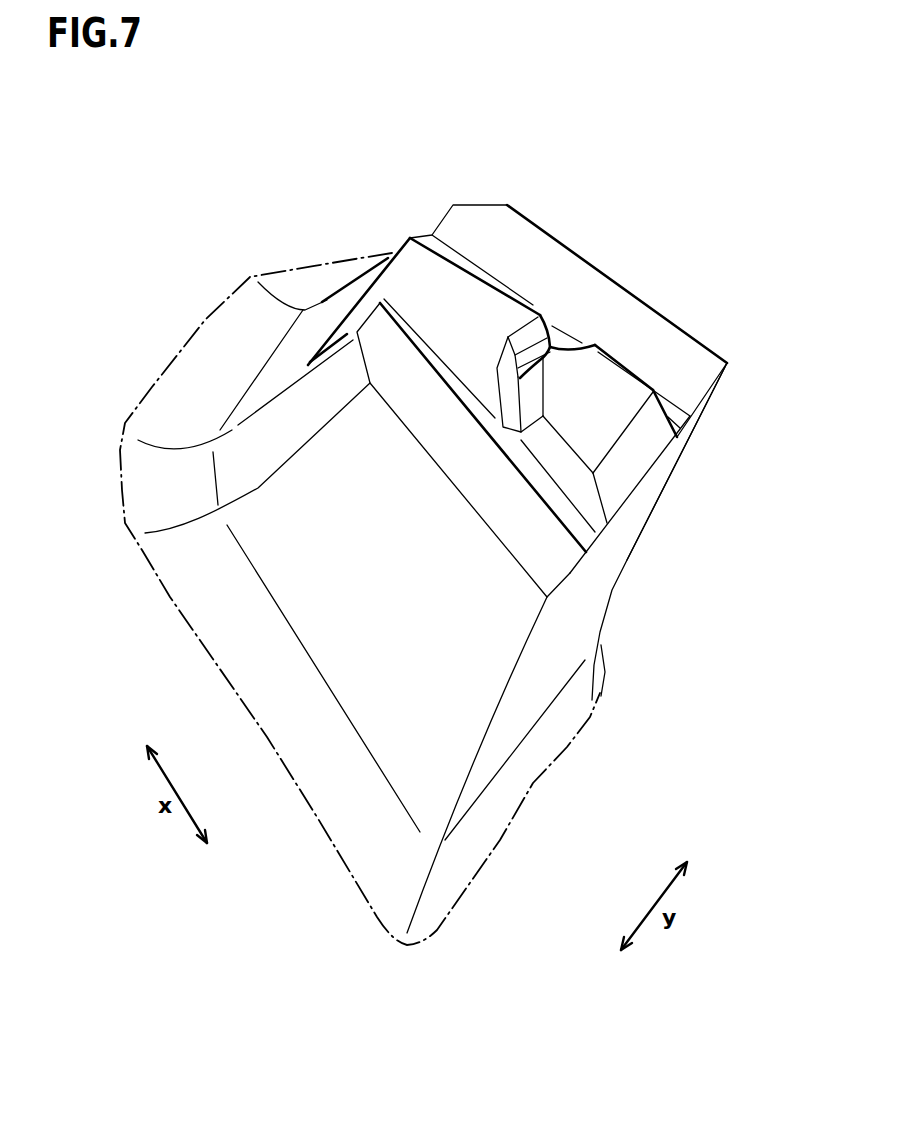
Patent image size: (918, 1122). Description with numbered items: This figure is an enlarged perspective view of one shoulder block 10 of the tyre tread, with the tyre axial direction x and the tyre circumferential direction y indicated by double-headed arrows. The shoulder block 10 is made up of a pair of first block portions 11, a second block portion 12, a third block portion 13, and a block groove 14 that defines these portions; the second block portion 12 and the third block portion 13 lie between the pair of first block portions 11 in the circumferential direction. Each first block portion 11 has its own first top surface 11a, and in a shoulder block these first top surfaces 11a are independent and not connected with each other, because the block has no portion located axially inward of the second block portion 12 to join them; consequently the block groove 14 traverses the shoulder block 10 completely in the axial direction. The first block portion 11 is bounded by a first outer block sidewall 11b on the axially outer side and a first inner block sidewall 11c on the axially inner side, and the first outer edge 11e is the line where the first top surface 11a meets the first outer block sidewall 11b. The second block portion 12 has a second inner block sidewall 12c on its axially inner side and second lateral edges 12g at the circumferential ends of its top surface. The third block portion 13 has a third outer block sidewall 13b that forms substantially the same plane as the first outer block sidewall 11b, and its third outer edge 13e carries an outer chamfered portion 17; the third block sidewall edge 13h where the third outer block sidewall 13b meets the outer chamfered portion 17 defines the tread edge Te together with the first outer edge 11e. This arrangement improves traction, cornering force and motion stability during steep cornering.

The shoulder block 10 is at (668, 155).
The first block portion 11 is at (680, 363).
The first top surface 11a is at (464, 446).
The first outer block sidewall 11b is at (510, 725).
The first inner block sidewall 11c is at (343, 337).
The first outer edge 11e is at (570, 573).
The second block portion 12 is at (455, 287).
The second inner block sidewall 12c is at (366, 292).
The second lateral edges 12g is at (477, 333).
The third block portion 13 is at (593, 387).
The third outer block sidewall 13b is at (627, 508).
The third outer edge 13e is at (633, 420).
The third block sidewall edge 13h is at (643, 477).
The block groove 14 is at (418, 337).
The outer chamfered portion 17 is at (633, 450).